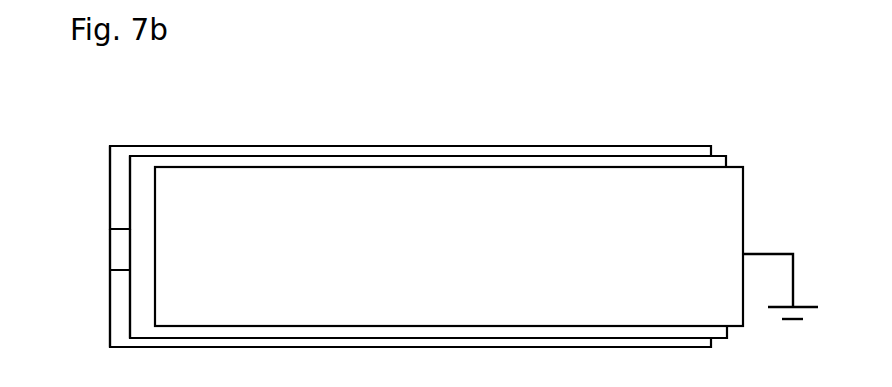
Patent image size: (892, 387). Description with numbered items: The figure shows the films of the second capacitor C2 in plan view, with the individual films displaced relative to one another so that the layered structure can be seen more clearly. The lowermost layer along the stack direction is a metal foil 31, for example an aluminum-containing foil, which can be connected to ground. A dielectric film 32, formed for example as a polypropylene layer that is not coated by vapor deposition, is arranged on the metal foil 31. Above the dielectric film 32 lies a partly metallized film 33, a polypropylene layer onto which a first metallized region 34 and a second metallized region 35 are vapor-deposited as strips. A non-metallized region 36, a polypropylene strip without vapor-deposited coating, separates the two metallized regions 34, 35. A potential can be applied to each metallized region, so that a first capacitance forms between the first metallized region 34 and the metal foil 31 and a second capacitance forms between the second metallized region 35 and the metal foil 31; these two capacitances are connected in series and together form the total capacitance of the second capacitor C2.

The second capacitor C2 is at (303, 108).
The metal foil 31 is at (463, 202).
The dielectric film 32 is at (542, 157).
The partly metallized film 33 is at (643, 146).
The first metallized region 34 is at (117, 202).
The second metallized region 35 is at (117, 327).
The non-metallized region 36 is at (117, 253).